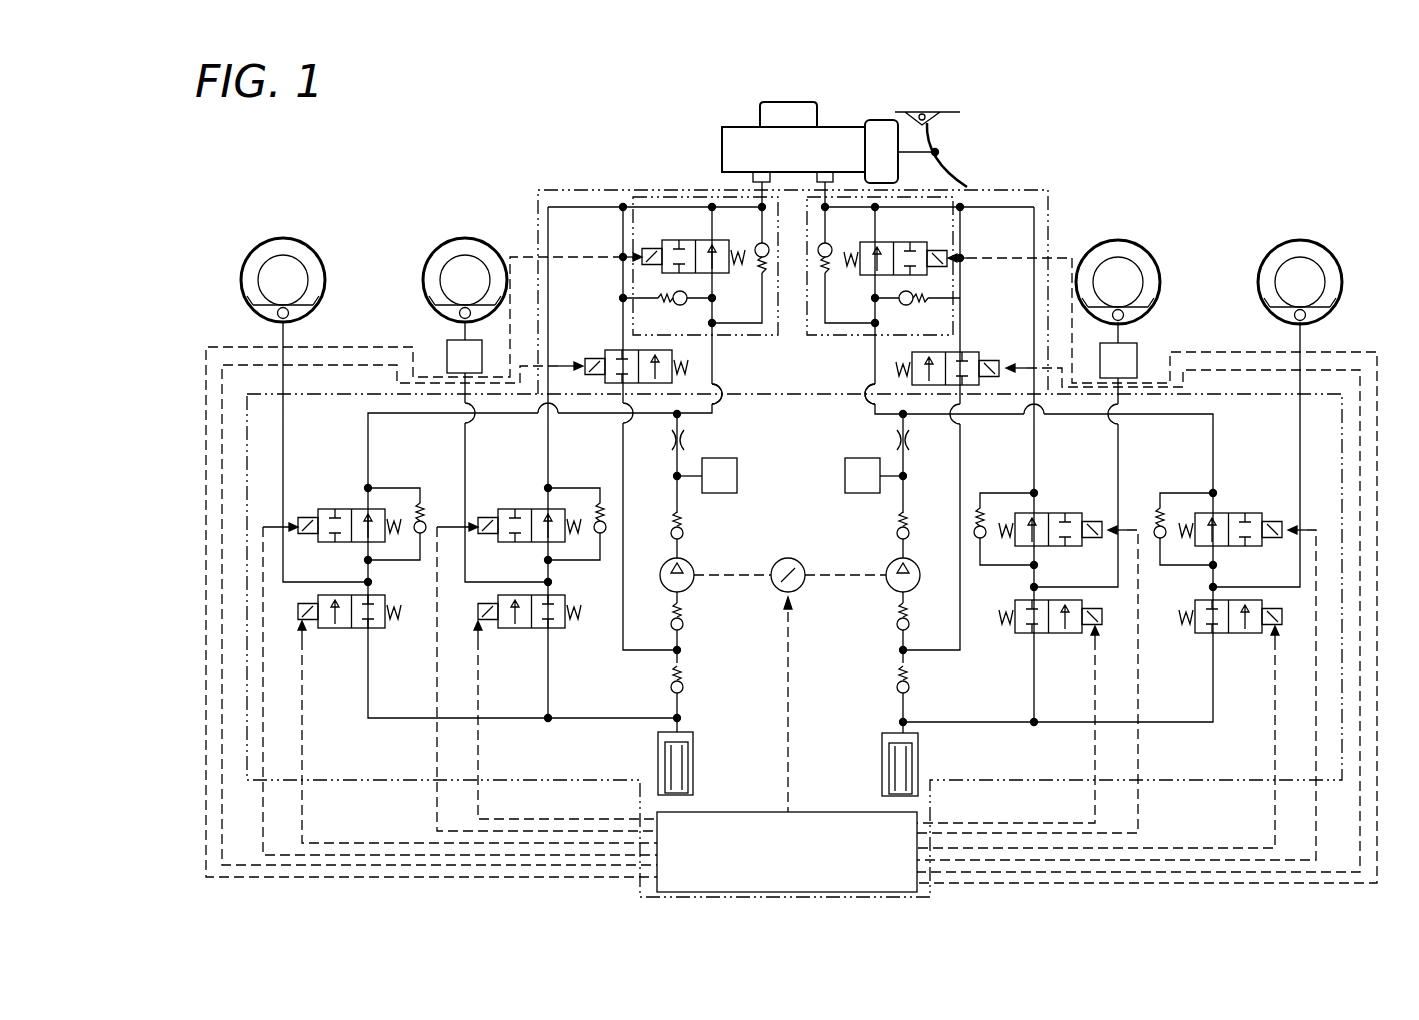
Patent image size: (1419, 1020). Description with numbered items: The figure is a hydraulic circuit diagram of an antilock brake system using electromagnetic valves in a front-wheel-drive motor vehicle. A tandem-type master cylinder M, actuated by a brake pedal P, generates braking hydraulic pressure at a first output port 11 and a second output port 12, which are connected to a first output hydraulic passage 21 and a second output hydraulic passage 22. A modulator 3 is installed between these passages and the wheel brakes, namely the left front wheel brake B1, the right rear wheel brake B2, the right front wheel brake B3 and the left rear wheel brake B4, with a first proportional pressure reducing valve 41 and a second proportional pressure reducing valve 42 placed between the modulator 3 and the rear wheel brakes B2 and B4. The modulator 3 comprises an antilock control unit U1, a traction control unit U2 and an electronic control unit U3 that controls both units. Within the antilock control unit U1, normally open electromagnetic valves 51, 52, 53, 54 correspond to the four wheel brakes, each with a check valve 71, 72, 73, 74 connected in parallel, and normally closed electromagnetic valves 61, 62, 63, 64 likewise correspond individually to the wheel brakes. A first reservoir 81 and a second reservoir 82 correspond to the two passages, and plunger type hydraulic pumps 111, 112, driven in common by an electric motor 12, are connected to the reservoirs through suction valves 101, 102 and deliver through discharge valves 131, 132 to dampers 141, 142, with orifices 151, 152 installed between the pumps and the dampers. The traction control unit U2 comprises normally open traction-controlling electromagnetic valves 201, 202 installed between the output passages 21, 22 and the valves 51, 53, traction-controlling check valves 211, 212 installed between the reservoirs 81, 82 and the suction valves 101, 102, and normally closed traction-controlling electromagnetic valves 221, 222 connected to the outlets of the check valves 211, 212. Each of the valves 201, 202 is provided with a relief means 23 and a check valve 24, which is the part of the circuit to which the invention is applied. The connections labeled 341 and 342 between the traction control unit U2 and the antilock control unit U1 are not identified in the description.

The tandem-type master cylinder M is at (740, 152).
The first output port 11 is at (752, 184).
The electric motor 12 is at (785, 592).
The brake pedal P is at (964, 188).
The antilock control unit U1 is at (1350, 414).
The traction control unit U2 is at (1053, 187).
The electronic control unit U3 is at (803, 862).
The first output hydraulic passage 21 is at (588, 205).
The second output hydraulic passage 22 is at (1003, 207).
The first normally open traction-controlling electromagnetic valve 201 is at (690, 247).
The second normally open traction-controlling electromagnetic valve 202 is at (898, 247).
The first normally closed traction-controlling electromagnetic valve 221 is at (605, 350).
The second normally closed traction-controlling electromagnetic valve 222 is at (980, 352).
The relief means 23 is at (680, 305).
The check valve 24 is at (756, 262).
The modulator 3 is at (380, 393).
The first proportional pressure reducing valve 41 is at (447, 352).
The second proportional pressure reducing valve 42 is at (1137, 357).
The left front wheel brake B1 is at (288, 237).
The right rear wheel brake B2 is at (470, 237).
The right front wheel brake B3 is at (1304, 237).
The left rear wheel brake B4 is at (1122, 237).
The first normally open electromagnetic valve 51 is at (345, 508).
The second normally open electromagnetic valve 52 is at (525, 508).
The third normally open electromagnetic valve 53 is at (1255, 513).
The fourth normally open electromagnetic valve 54 is at (1075, 513).
The first normally closed electromagnetic valve 61 is at (330, 628).
The second normally closed electromagnetic valve 62 is at (508, 628).
The third normally closed electromagnetic valve 63 is at (1235, 633).
The fourth normally closed electromagnetic valve 64 is at (1055, 633).
The first check valve 71 is at (421, 535).
The second check valve 72 is at (601, 535).
The third check valve 73 is at (1159, 540).
The fourth check valve 74 is at (979, 540).
The first reservoir 81 is at (693, 745).
The second reservoir 82 is at (880, 745).
The first suction valve 101 is at (688, 633).
The second suction valve 102 is at (890, 633).
The first plunger type hydraulic pump 111 is at (690, 588).
The second plunger type hydraulic pump 112 is at (885, 588).
The first discharge valve 131 is at (682, 528).
The second discharge valve 132 is at (897, 528).
The first damper 141 is at (735, 470).
The second damper 142 is at (848, 470).
The first orifice 151 is at (668, 446).
The second orifice 152 is at (911, 446).
The first traction-controlling check valve 211 is at (688, 695).
The second traction-controlling check valve 212 is at (890, 695).
The hydraulic passage 341 is at (720, 400).
The hydraulic passage 342 is at (872, 400).